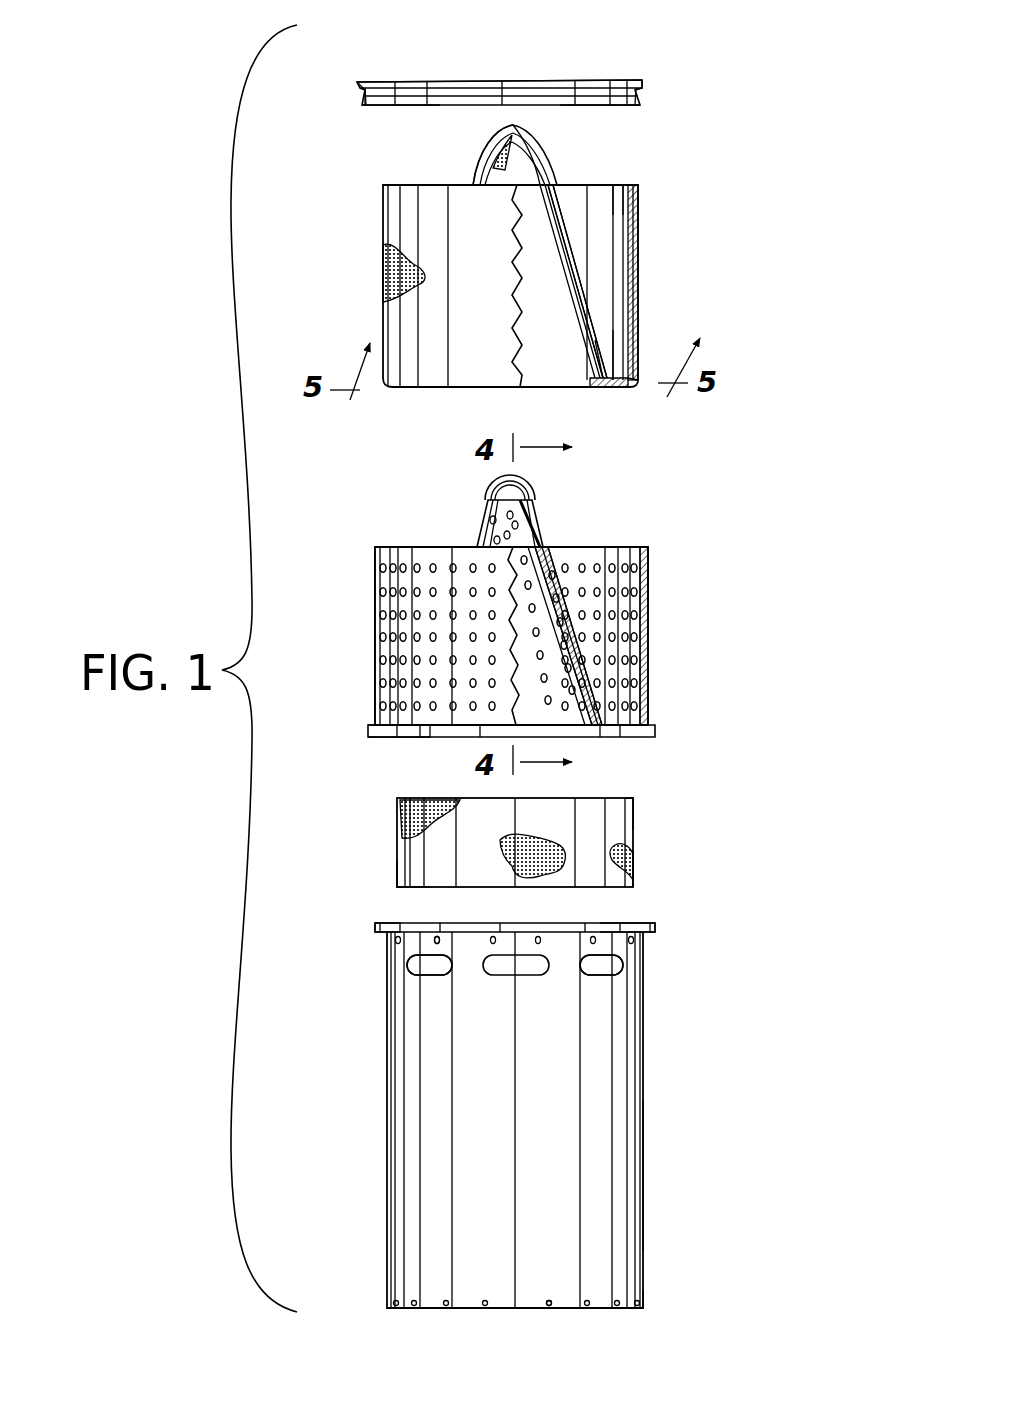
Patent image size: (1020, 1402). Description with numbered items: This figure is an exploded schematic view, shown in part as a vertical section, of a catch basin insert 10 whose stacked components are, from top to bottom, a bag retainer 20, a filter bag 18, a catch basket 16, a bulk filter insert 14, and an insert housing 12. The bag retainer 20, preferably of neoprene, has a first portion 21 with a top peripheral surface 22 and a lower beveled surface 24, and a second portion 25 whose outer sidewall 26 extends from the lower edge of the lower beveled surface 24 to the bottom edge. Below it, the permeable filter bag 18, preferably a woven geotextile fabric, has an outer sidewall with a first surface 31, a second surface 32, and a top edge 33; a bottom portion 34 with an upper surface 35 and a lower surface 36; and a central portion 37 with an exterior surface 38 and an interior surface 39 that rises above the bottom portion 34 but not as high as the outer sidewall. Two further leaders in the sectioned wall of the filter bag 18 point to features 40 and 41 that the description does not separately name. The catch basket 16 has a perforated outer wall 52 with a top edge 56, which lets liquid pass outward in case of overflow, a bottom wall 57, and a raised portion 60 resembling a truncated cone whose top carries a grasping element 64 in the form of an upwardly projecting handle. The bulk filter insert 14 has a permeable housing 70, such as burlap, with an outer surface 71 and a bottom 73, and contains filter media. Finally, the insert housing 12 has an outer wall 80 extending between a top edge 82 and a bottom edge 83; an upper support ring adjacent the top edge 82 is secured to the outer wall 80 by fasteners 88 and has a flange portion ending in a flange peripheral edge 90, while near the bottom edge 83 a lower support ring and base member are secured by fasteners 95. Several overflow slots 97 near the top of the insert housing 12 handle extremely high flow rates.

The catch basin insert 10 is at (700, 562).
The insert housing 12 is at (690, 1078).
The bulk filter insert 14 is at (672, 830).
The catch basket 16 is at (702, 620).
The filter bag 18 is at (712, 258).
The bag retainer 20 is at (682, 92).
The first portion 21 is at (365, 72).
The top peripheral surface 22 is at (643, 82).
The lower beveled surface 24 is at (358, 86).
The second portion 25 is at (362, 100).
The outer sidewall 26 is at (640, 100).
The first surface 31 is at (635, 207).
The second surface 32 is at (605, 200).
The top edge 33 is at (638, 190).
The bottom portion 34 is at (606, 390).
The upper surface 35 is at (610, 378).
The lower surface 36 is at (628, 388).
The central portion 37 is at (572, 240).
The exterior surface 38 is at (478, 165).
The interior surface 39 is at (580, 345).
The container wall layer 40 is at (585, 310).
The handle top 41 is at (535, 140).
The outer wall 52 is at (375, 630).
The top edge 56 is at (645, 547).
The bottom wall 57 is at (400, 738).
The raised portion 60 is at (470, 530).
The grasping element 64 is at (495, 475).
The permeable housing 70 is at (630, 805).
The outer surface 71 is at (630, 860).
The bottom 73 is at (410, 885).
The outer wall 80 is at (648, 1170).
The top edge 82 is at (650, 935).
The bottom edge 83 is at (640, 1305).
The fasteners 88 is at (435, 945).
The flange peripheral edge 90 is at (378, 926).
The fasteners 95 is at (550, 1300).
The overflow slots 97 is at (440, 975).